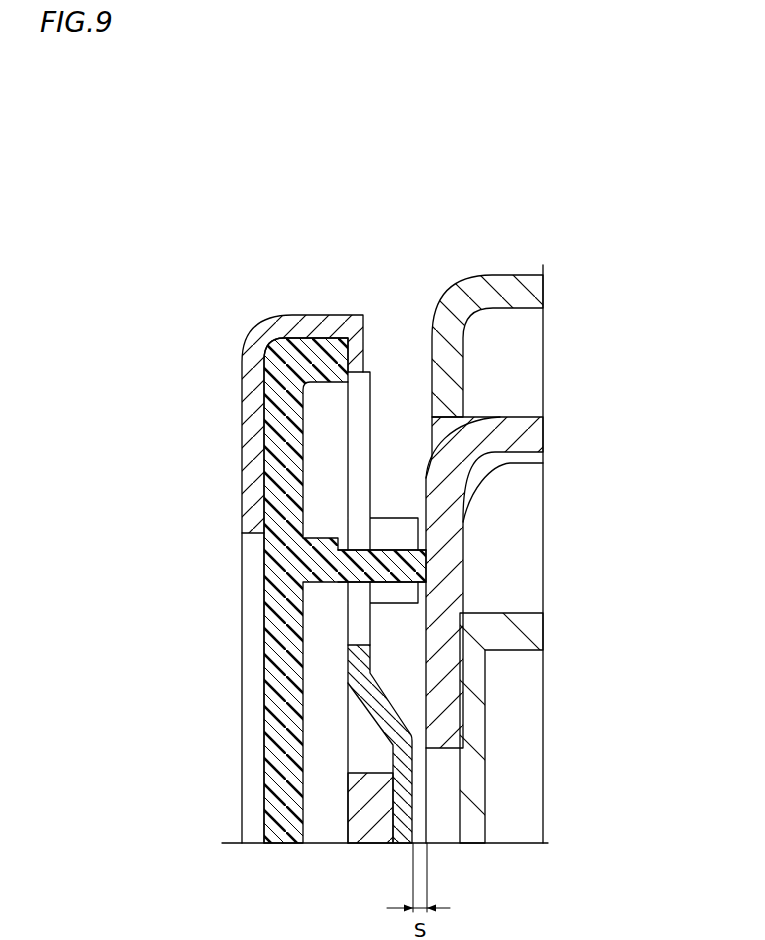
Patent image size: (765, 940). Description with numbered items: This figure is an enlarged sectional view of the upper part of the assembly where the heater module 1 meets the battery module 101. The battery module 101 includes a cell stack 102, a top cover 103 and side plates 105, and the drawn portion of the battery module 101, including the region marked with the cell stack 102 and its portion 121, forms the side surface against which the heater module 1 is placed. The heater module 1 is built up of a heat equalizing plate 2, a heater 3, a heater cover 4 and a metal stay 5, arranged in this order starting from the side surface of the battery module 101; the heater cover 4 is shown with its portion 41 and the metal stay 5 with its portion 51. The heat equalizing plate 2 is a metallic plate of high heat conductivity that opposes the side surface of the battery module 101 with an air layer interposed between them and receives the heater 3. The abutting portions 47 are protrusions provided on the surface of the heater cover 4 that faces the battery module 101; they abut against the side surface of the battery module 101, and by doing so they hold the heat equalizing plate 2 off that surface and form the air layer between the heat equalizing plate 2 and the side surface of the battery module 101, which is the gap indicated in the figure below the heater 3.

The heater module 1 is at (289, 555).
The heat equalizing plate 2 is at (392, 738).
The heater 3 is at (358, 830).
The heater cover 4 is at (289, 590).
The elastic body main portion 41 is at (265, 655).
The abutting portion 47 is at (396, 548).
The metal stay 5 is at (259, 579).
The cylindrical portion of reinforcing ring 51 is at (247, 447).
The battery module 101 is at (542, 507).
The cell stack 102 is at (559, 728).
The housing inner peripheral portion 121 is at (537, 631).
The top cover 103 is at (528, 291).
The side plate 105 is at (538, 432).